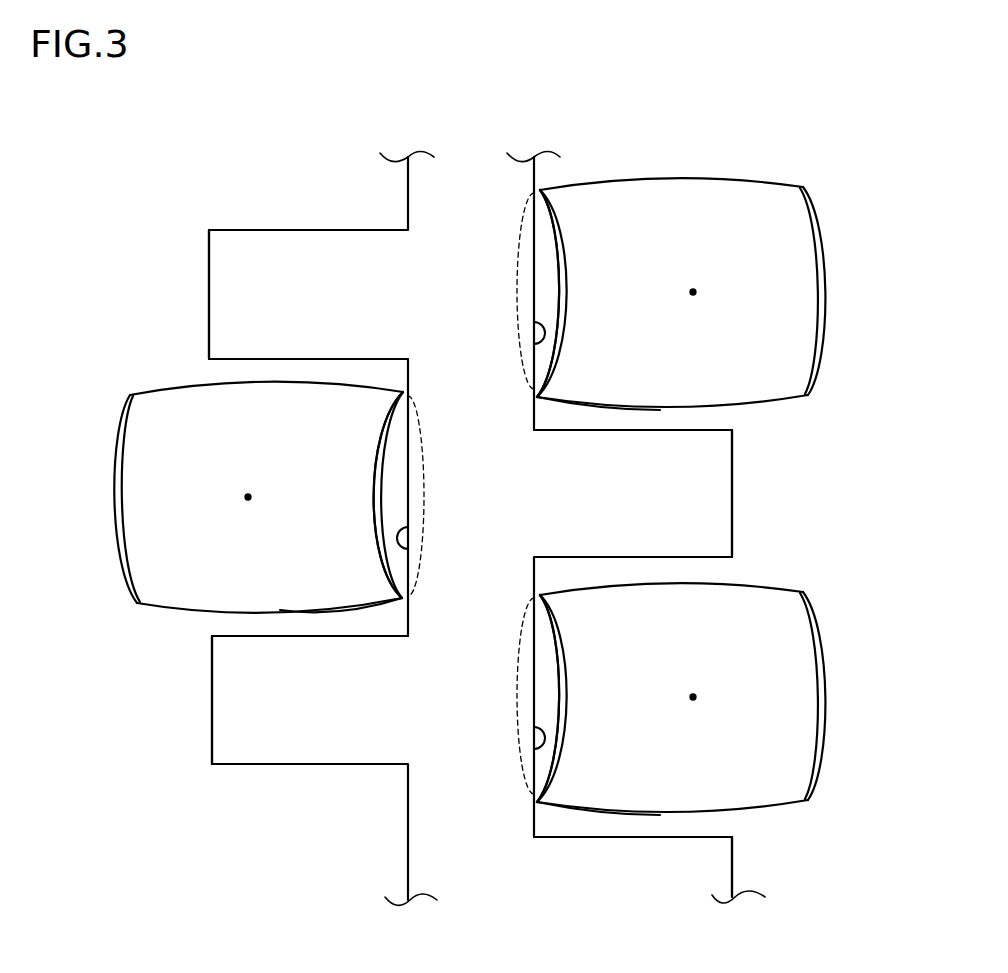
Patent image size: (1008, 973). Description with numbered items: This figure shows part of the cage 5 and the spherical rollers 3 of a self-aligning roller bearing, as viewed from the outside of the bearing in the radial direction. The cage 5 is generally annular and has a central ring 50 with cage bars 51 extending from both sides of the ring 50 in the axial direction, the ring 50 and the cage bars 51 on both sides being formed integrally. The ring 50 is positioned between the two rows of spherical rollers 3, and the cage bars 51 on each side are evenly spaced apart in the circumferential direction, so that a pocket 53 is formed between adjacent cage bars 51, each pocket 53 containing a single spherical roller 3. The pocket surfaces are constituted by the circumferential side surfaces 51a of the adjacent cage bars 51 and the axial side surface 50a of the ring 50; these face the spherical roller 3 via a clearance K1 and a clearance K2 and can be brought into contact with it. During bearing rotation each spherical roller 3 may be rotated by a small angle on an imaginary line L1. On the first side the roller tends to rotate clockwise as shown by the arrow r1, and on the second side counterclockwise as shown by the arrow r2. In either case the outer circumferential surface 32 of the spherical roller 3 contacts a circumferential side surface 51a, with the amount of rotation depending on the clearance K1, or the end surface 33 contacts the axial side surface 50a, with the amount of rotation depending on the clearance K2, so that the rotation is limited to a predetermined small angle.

The spherical roller 3 is at (117, 515).
The cage 5 is at (205, 257).
The outer circumferential surface 32 is at (315, 612).
The end surface 33 is at (398, 442).
The ring 50 is at (488, 187).
The axial side surface 50a is at (402, 547).
The cage bar 51 is at (220, 298).
The circumferential side surface 51a is at (313, 359).
The pocket 53 is at (205, 624).
The clearance K1 is at (373, 620).
The clearance K2 is at (400, 495).
The imaginary line L1 is at (248, 497).
The arrow r1 is at (270, 460).
The arrow r2 is at (673, 258).